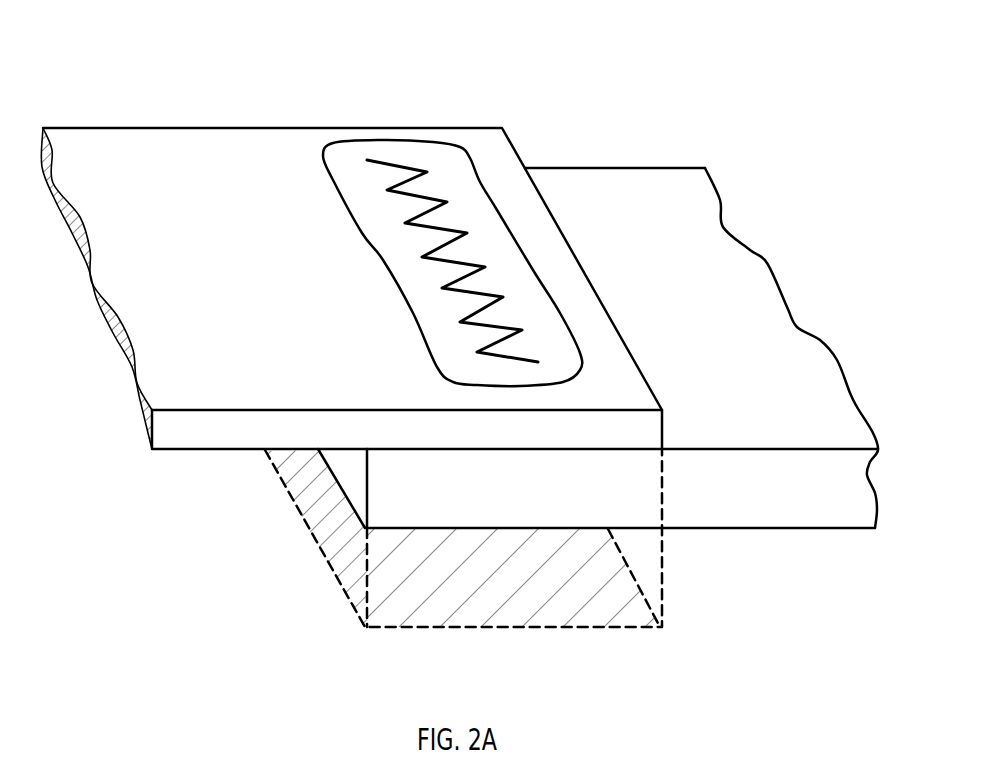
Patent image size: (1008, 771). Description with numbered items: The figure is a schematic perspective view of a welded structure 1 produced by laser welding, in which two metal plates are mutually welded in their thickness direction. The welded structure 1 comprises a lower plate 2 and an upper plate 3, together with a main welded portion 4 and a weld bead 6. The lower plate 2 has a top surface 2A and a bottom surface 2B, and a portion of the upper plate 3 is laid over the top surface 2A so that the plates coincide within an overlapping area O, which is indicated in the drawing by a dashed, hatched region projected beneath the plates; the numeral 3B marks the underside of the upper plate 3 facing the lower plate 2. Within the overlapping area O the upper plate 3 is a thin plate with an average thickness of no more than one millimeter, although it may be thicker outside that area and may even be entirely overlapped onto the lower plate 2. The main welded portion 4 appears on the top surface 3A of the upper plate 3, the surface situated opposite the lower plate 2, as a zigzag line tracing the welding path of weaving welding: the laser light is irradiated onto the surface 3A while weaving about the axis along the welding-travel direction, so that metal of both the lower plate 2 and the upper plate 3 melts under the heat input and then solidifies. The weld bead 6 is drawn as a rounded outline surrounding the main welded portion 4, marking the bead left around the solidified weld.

The welded structure 1 is at (459, 364).
The lower plate 2 is at (598, 353).
The surface (top surface) of lower plate 2A is at (637, 197).
The surface (bottom surface) of lower plate 2B is at (705, 533).
The upper plate 3 is at (459, 330).
The surface (top surface) of upper plate 3A is at (208, 173).
The bottom surface of plate 3B is at (277, 452).
The main welded portion 4 is at (423, 197).
The weld bead 6 is at (350, 168).
The overlapping area O is at (407, 608).